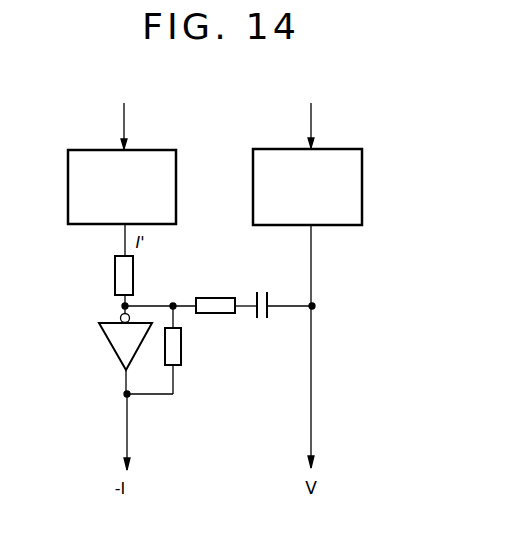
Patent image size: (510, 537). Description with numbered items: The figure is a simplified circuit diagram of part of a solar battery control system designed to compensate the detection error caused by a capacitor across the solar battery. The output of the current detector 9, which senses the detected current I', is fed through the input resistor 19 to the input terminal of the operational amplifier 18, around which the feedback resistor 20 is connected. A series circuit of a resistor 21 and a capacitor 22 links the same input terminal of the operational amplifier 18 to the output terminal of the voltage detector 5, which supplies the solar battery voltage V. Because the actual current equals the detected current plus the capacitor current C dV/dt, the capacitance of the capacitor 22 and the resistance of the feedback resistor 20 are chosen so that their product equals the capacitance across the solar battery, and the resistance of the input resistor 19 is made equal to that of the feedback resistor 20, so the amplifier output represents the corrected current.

The current detector 9 is at (98, 149).
The voltage detector 5 is at (338, 148).
The input resistor 19 is at (133, 271).
The operational amplifier 18 is at (108, 353).
The feedback resistor 20 is at (181, 352).
The resistor 21 is at (215, 297).
The capacitor 22 is at (265, 291).